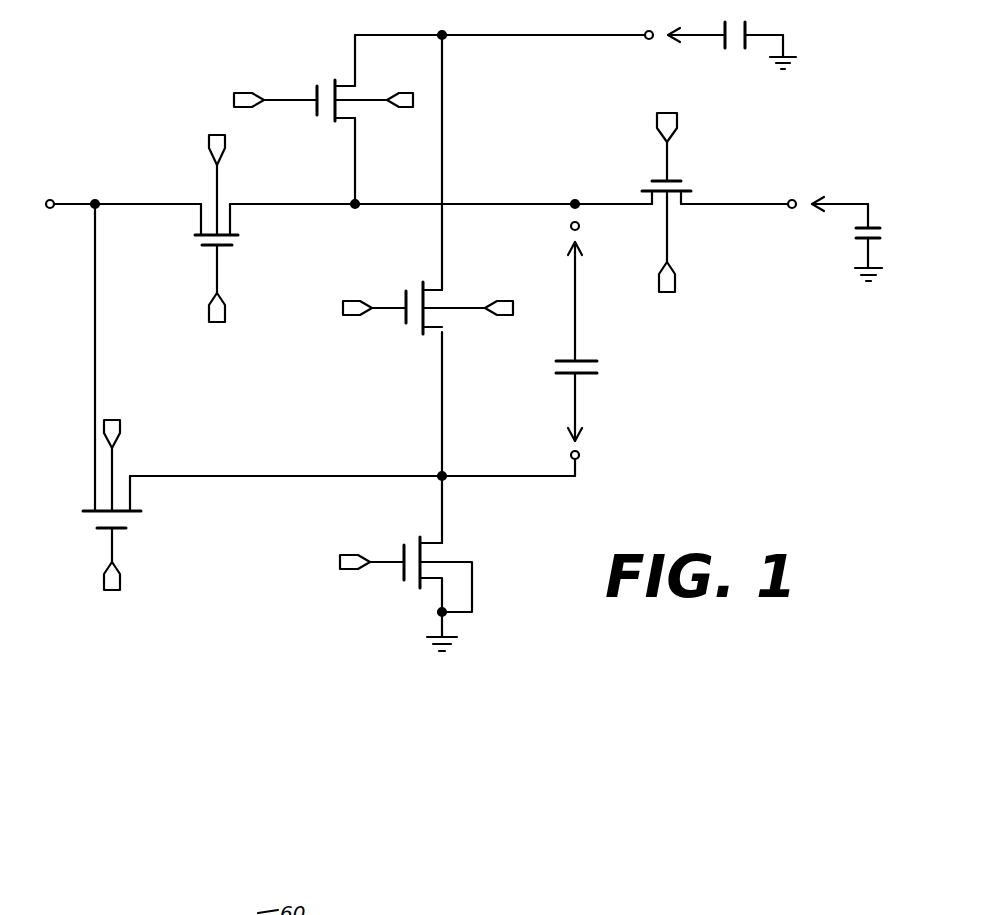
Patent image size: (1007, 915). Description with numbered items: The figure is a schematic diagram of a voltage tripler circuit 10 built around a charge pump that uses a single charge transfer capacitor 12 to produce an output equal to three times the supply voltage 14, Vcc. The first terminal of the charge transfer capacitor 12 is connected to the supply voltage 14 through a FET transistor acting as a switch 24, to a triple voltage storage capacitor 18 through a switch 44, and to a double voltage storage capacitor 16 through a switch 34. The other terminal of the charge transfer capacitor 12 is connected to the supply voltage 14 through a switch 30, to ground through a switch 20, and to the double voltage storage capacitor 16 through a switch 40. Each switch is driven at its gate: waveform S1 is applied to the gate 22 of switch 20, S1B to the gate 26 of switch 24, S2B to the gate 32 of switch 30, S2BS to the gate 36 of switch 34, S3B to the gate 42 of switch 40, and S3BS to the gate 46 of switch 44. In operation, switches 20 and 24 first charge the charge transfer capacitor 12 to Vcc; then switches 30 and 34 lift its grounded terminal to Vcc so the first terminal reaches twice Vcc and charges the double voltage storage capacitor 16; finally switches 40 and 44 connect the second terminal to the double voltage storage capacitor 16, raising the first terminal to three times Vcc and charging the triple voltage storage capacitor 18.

The voltage tripler circuit 10 is at (812, 75).
The charge transfer capacitor 12 is at (598, 369).
The supply voltage 14 is at (74, 203).
The double voltage storage capacitor 16 is at (748, 28).
The triple voltage storage capacitor 18 is at (858, 233).
The switch 20 is at (450, 549).
The gate 22 is at (354, 569).
The switch 24 is at (238, 242).
The gate 26 is at (226, 310).
The switch 30 is at (130, 519).
The gate 32 is at (119, 580).
The switch 34 is at (333, 76).
The gate 36 is at (243, 95).
The switch 40 is at (409, 336).
The gate 42 is at (355, 300).
The switch 44 is at (671, 206).
The gate 46 is at (662, 124).